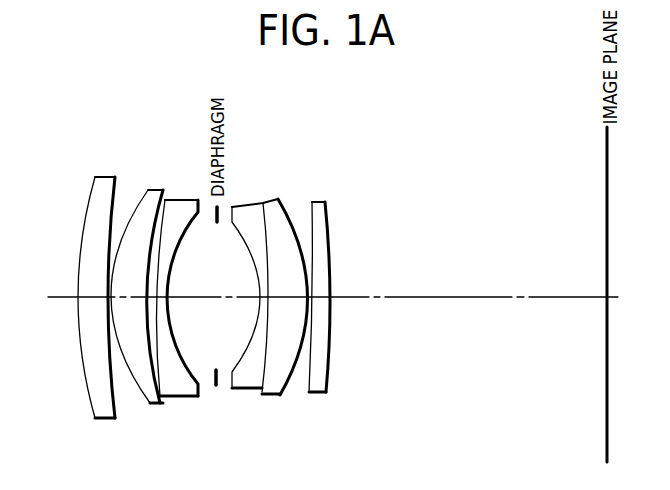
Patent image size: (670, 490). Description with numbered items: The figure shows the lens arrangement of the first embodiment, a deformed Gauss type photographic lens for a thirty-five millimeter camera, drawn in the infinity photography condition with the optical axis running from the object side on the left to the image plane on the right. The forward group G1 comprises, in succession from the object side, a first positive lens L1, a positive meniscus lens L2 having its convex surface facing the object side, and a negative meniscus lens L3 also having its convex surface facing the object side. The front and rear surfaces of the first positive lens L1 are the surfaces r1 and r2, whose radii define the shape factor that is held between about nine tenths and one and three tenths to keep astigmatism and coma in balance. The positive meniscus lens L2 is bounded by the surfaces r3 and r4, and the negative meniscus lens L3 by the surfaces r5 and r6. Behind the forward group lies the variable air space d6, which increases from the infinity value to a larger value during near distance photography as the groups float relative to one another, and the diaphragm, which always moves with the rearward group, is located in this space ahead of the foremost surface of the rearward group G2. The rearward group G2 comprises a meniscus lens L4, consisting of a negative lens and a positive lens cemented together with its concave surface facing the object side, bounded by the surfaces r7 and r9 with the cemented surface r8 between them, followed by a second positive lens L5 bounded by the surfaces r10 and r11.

The forward group G1 is at (195, 122).
The rearward group G2 is at (342, 123).
The first positive lens L1 is at (102, 177).
The positive meniscus lens L2 is at (157, 190).
The negative meniscus lens L3 is at (187, 200).
The meniscus lens L4 is at (287, 182).
The second positive lens L5 is at (318, 202).
The front surface of lens L1 r1 is at (95, 418).
The rear surface of lens L1 r2 is at (115, 418).
The front surface of lens L2 r3 is at (148, 404).
The rear surface of lens L2 r4 is at (160, 405).
The front surface of lens L3 r5 is at (175, 397).
The rear surface of lens L3 r6 is at (195, 397).
The front surface of lens L4 r7 is at (234, 388).
The cemented surface of lens L4 r8 is at (255, 394).
The rear surface of lens L4 r9 is at (288, 388).
The front surface of lens L5 r10 is at (308, 392).
The rear surface of lens L5 r11 is at (328, 392).
The variable air space d6 is at (215, 283).